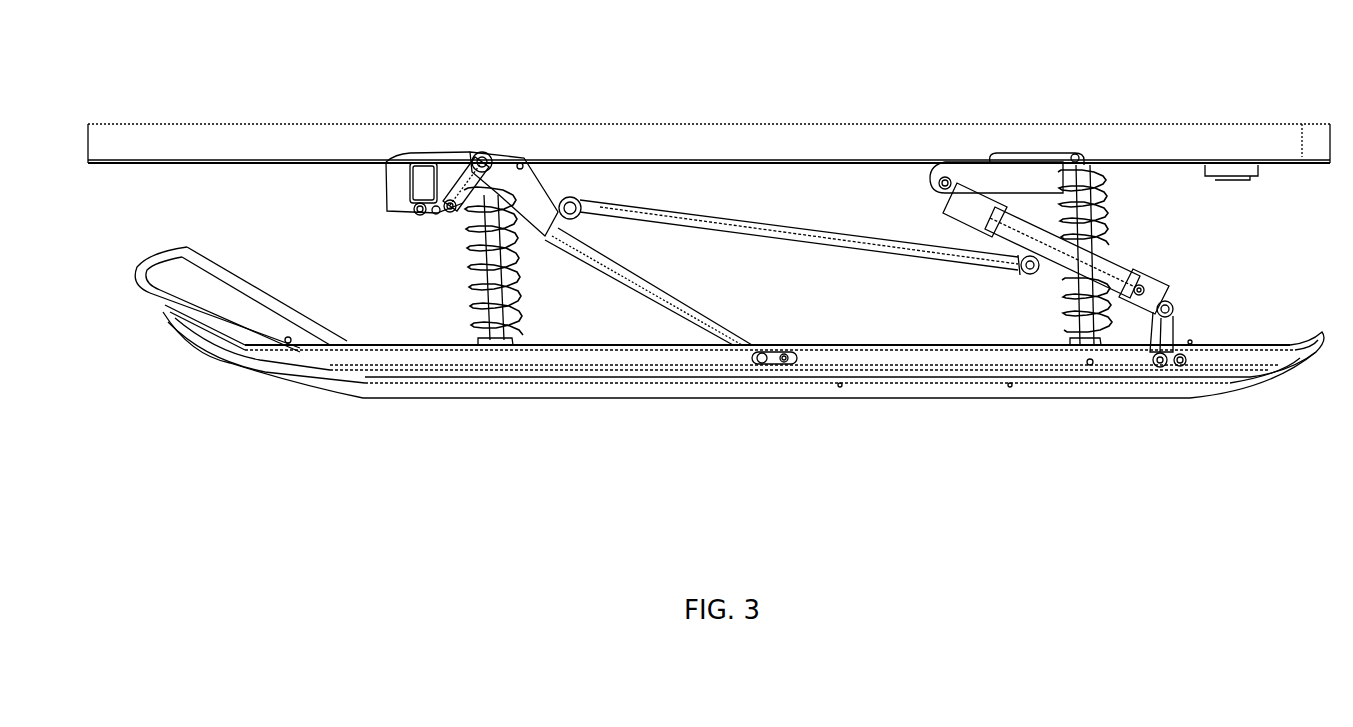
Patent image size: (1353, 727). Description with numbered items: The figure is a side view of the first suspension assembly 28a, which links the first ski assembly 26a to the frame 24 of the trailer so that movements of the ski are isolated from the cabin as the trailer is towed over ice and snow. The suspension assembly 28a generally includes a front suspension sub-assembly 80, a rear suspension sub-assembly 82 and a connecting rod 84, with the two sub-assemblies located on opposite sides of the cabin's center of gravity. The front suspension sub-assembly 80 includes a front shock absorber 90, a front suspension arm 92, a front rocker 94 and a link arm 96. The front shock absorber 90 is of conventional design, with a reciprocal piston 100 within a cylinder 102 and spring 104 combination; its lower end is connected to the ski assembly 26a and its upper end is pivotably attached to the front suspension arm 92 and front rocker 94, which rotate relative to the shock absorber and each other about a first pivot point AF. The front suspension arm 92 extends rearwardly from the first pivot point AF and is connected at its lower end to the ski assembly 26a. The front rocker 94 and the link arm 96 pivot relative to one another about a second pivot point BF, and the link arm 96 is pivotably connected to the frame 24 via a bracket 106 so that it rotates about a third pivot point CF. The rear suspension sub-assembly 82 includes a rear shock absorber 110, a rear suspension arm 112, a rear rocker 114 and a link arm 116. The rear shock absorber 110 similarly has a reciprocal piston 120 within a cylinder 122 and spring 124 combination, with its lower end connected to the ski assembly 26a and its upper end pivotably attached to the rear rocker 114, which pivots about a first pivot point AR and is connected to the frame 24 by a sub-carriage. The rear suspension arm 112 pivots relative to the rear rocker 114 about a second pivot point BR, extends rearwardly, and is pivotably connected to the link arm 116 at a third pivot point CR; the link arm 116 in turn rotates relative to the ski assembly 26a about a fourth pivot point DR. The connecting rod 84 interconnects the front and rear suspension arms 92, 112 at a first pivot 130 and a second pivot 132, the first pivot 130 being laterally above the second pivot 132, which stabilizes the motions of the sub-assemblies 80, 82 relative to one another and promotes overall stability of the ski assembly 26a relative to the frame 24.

The frame 24 is at (709, 101).
The first suspension assembly 28a is at (773, 190).
The first ski assembly 26a is at (961, 381).
The front suspension sub-assembly 80 is at (499, 300).
The rear suspension sub-assembly 82 is at (1101, 261).
The connecting rod 84 is at (809, 186).
The front shock absorber 90 is at (526, 318).
The front suspension arm 92 is at (671, 303).
The front rocker 94 is at (462, 182).
The link arm 96 is at (432, 214).
The reciprocal piston 100 is at (578, 160).
The cylinder 102 is at (492, 283).
The spring 104 is at (505, 306).
The bracket 106 is at (358, 179).
The rear shock absorber 110 is at (986, 358).
The rear suspension arm 112 is at (1084, 312).
The rear rocker 114 is at (1031, 127).
The link arm 116 is at (1228, 386).
The reciprocal piston 120 is at (1072, 257).
The cylinder 122 is at (1087, 302).
The spring 124 is at (1094, 221).
The first pivot 130 is at (578, 202).
The second pivot 132 is at (1024, 271).
The first pivot point AF is at (487, 156).
The second pivot point BF is at (450, 214).
The third pivot point CF is at (414, 209).
The first pivot point AR is at (1081, 165).
The second pivot point BR is at (946, 176).
The third pivot point CR is at (1160, 316).
The fourth pivot point DR is at (1162, 368).